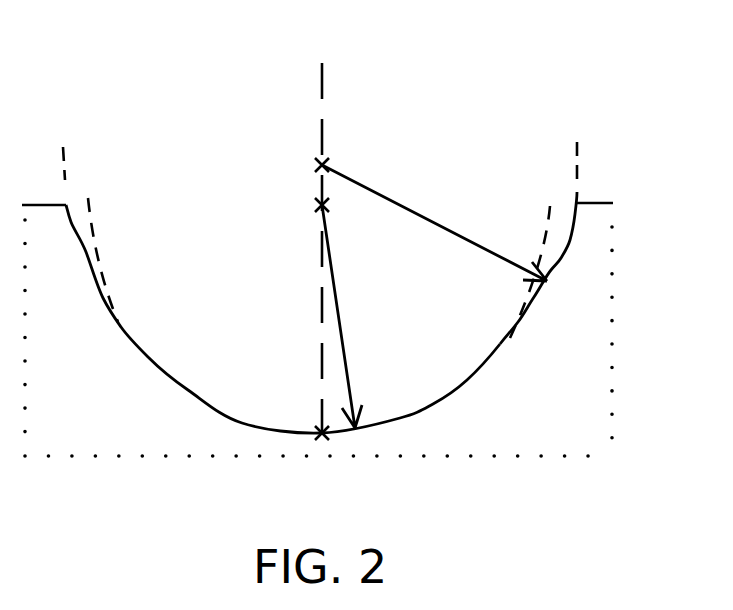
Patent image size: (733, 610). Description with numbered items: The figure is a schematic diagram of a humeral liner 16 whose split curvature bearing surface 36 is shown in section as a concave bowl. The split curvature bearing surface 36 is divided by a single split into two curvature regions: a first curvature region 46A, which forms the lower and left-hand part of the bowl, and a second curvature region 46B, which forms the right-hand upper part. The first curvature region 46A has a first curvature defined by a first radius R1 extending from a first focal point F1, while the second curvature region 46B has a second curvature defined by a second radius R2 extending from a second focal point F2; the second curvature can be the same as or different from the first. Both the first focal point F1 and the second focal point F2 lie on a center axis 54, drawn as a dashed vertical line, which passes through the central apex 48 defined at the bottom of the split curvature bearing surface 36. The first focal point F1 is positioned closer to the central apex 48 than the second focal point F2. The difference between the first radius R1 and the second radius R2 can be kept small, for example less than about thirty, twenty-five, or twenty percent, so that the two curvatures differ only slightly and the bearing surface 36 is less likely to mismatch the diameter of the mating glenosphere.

The humeral liner 16 is at (351, 231).
The split curvature bearing surface 36 is at (146, 388).
The first curvature region 46A is at (433, 405).
The second curvature region 46B is at (560, 263).
The central apex 48 is at (322, 437).
The center axis 54 is at (322, 67).
The first focal point F1 is at (316, 198).
The second focal point F2 is at (316, 158).
The first radius R1 is at (344, 347).
The second radius R2 is at (380, 193).